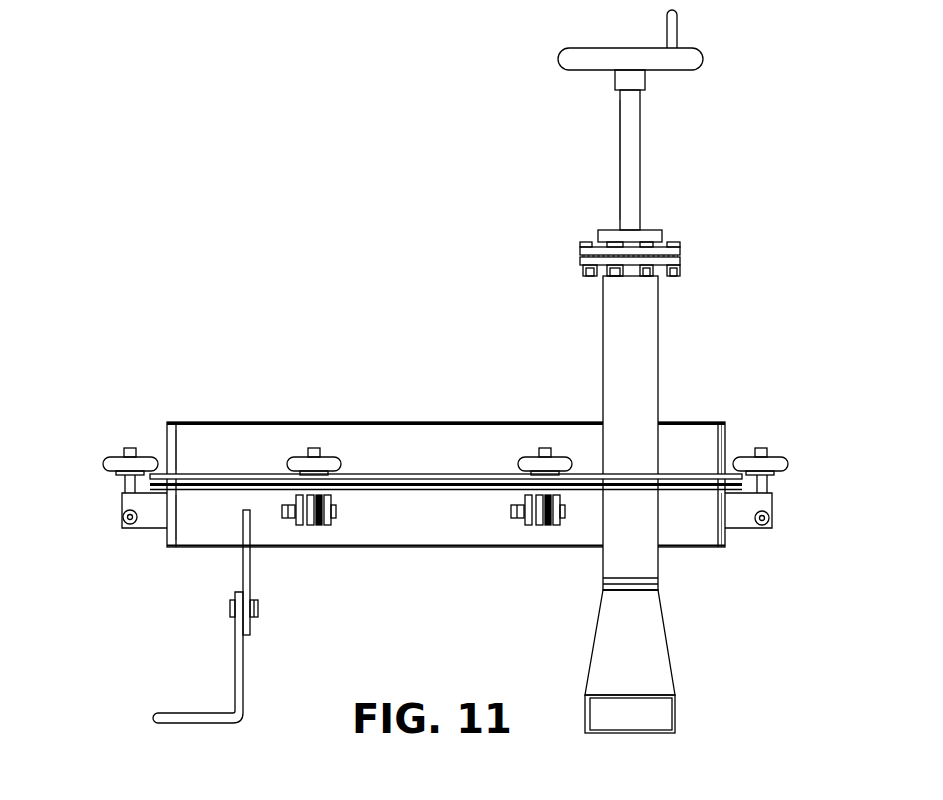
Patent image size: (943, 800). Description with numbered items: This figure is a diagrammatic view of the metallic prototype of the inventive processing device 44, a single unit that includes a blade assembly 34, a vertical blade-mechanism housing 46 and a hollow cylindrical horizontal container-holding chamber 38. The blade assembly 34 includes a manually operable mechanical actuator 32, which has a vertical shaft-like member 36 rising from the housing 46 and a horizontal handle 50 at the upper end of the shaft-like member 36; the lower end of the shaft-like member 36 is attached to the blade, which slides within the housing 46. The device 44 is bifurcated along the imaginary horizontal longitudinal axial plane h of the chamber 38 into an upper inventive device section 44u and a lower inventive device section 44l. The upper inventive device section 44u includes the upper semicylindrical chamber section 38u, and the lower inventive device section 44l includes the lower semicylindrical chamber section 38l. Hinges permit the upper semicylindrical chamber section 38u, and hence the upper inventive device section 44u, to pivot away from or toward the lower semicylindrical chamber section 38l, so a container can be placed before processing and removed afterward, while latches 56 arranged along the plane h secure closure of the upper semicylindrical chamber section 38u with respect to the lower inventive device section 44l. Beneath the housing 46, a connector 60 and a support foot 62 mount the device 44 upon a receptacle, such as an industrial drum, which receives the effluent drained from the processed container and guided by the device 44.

The manually operable mechanical actuator 32 is at (645, 140).
The blade assembly 34 is at (674, 169).
The vertical shaft-like member 36 is at (618, 168).
The hollow cylindrical horizontal container-holding chamber 38 is at (347, 420).
The upper semicylindrical chamber section 38u is at (447, 458).
The lower semicylindrical chamber section 38l is at (442, 526).
The inventive processing device 44 is at (228, 321).
The upper inventive device section 44u is at (728, 435).
The lower inventive device section 44l is at (730, 538).
The vertical blade-mechanism housing 46 is at (662, 352).
The horizontal handle 50 is at (627, 45).
The latches 56 is at (283, 460).
The connector 60 is at (676, 675).
The support foot 62 is at (247, 682).
The horizontal longitudinal axial plane h is at (413, 487).